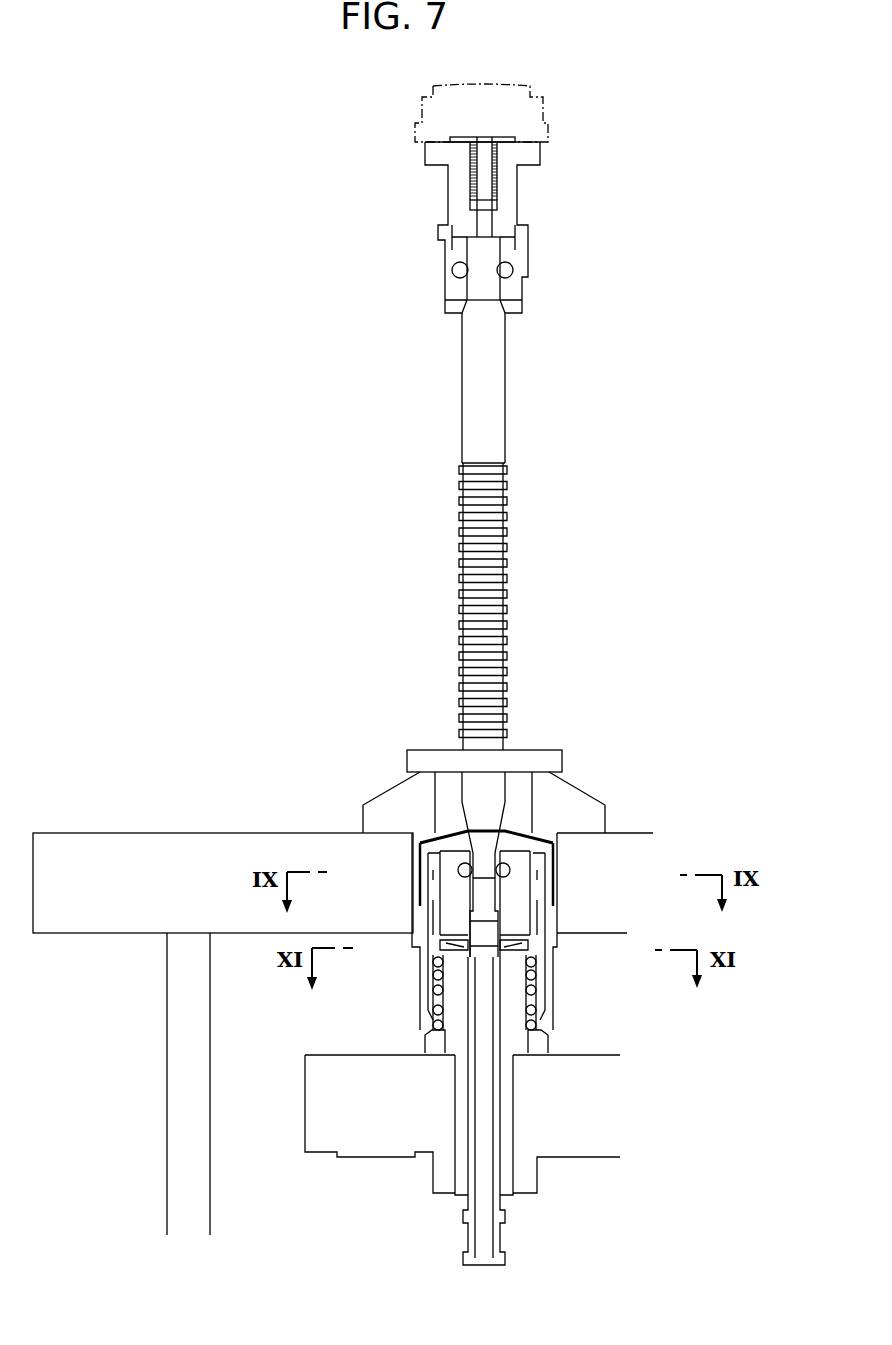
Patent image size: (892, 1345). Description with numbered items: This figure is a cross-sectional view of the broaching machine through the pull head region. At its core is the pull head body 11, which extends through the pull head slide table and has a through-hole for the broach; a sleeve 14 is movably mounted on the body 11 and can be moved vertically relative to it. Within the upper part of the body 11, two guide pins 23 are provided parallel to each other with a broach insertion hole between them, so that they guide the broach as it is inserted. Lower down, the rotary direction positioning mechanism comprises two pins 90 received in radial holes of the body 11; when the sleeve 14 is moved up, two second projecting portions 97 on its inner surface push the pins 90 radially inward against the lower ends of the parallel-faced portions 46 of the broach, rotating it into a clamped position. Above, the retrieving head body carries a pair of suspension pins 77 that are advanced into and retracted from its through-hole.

The suspension pins 77 is at (513, 270).
The pull head body 11 is at (516, 868).
The sleeve 14 is at (545, 920).
The guide pins 23 is at (462, 866).
The parallel-faced portions 46 is at (503, 928).
The pins 90 is at (502, 947).
The second projecting portions 97 is at (455, 952).